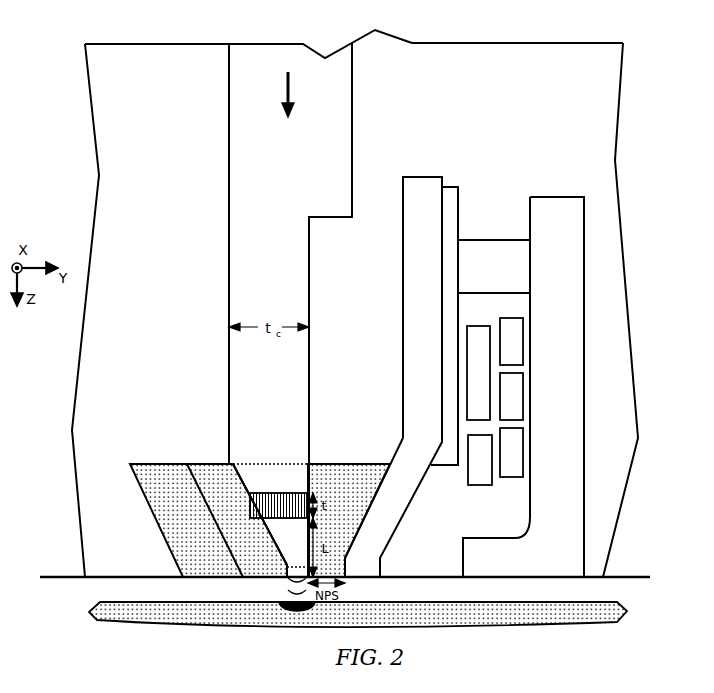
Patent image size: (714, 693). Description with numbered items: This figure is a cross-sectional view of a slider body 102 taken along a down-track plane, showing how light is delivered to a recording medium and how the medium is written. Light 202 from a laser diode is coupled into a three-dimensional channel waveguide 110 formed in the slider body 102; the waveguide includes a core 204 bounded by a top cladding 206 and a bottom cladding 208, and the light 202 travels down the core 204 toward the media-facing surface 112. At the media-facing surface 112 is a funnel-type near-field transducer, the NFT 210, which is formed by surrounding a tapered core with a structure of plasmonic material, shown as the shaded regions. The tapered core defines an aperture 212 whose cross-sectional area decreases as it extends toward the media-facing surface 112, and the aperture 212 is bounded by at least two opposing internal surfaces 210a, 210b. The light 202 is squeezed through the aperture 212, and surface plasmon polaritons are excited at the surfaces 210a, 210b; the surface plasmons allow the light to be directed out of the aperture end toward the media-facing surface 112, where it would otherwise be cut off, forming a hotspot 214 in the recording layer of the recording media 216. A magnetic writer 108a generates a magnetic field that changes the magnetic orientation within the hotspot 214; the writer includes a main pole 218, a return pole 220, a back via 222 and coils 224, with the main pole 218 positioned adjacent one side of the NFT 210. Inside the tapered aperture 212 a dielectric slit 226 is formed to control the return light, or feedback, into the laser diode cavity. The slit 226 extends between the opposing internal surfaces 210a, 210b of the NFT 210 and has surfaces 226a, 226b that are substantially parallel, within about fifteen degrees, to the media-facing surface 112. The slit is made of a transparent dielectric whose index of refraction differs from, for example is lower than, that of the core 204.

The slider body 102 is at (86, 24).
The magnetic writer 108a is at (483, 147).
The three-dimensional channel waveguide 110 is at (212, 246).
The media-facing surface 112 is at (610, 578).
The light 202 is at (275, 85).
The core 204 is at (292, 53).
The top cladding 206 is at (433, 47).
The bottom cladding 208 is at (152, 53).
The funnel (aperture) NFT 210 is at (170, 464).
The opposing internal surface 210a is at (233, 482).
The opposing internal surface 210b is at (310, 480).
The aperture 212 is at (270, 476).
The hotspot 214 is at (297, 612).
The recording media 216 is at (485, 622).
The main pole 218 is at (388, 548).
The return pole 220 is at (585, 453).
The back via 222 is at (488, 246).
The coils 224 is at (507, 478).
The dielectric slit 226 is at (292, 492).
The slit surface 226a is at (263, 488).
The slit surface 226b is at (285, 530).